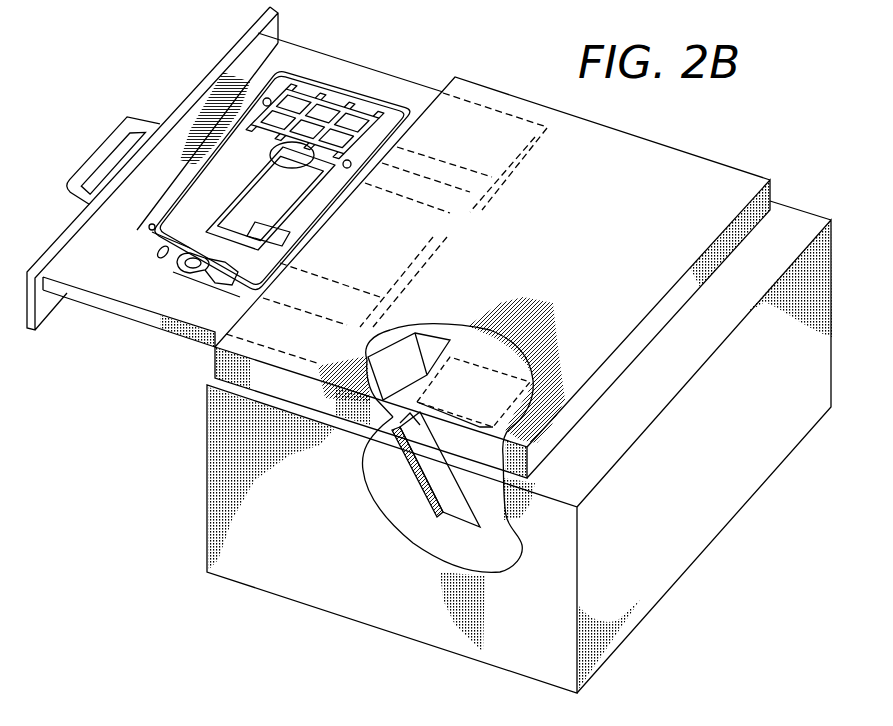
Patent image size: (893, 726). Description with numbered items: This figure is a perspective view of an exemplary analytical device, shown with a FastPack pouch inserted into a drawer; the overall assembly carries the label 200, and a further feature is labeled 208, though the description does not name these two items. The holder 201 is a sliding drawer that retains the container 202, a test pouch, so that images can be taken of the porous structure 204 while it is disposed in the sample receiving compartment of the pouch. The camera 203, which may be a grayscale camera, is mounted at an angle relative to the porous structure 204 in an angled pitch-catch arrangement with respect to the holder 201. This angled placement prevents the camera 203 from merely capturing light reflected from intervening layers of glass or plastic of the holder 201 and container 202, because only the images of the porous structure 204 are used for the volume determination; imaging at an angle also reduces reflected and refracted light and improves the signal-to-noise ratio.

The sample tray 200 is at (150, 252).
The holder 201 is at (197, 93).
The container 202 is at (336, 86).
The camera 203 is at (447, 503).
The porous structure 204 is at (190, 262).
The grid array 208 is at (363, 108).